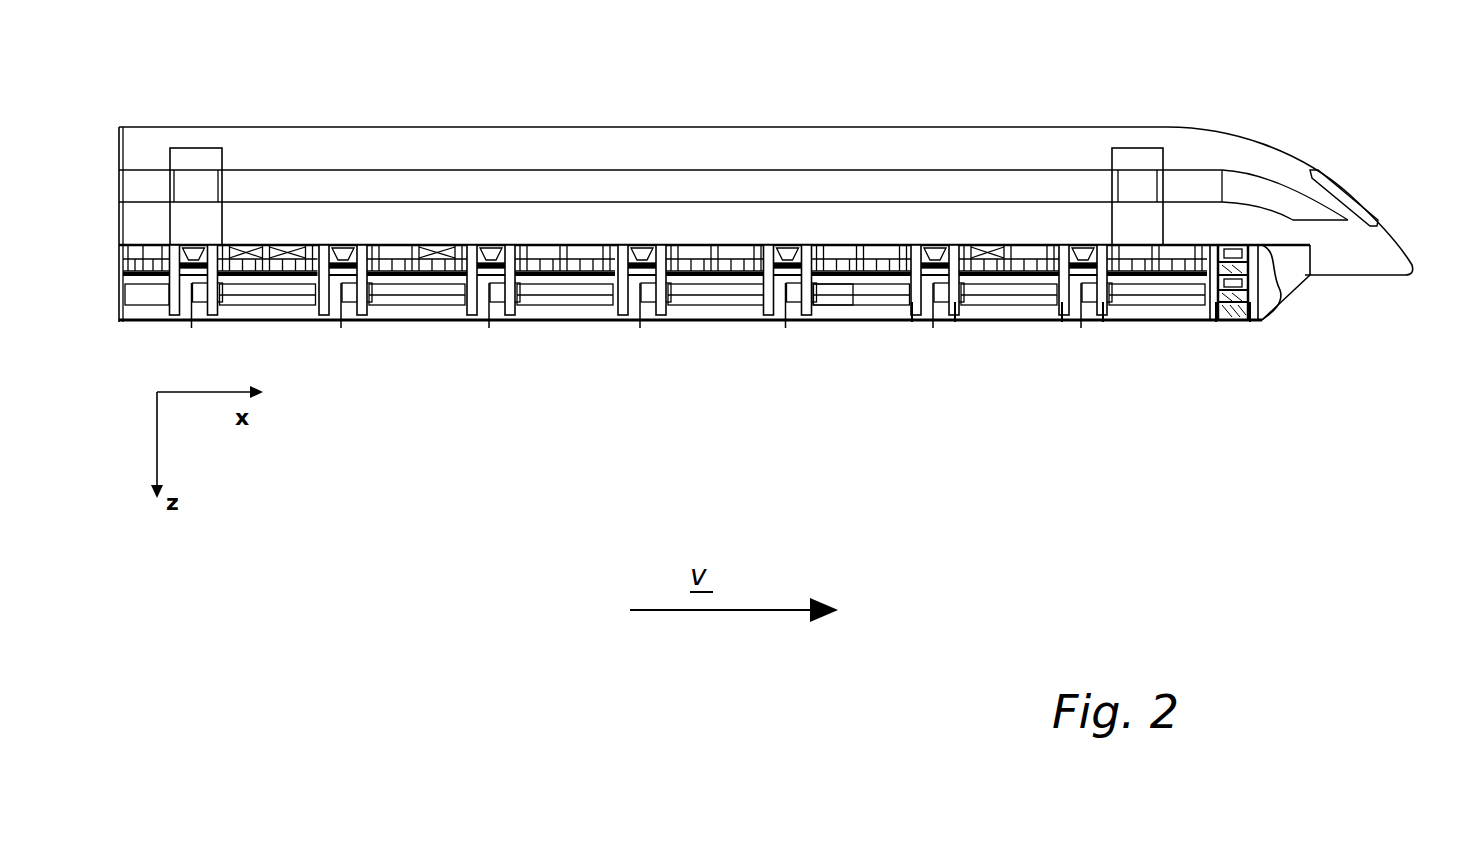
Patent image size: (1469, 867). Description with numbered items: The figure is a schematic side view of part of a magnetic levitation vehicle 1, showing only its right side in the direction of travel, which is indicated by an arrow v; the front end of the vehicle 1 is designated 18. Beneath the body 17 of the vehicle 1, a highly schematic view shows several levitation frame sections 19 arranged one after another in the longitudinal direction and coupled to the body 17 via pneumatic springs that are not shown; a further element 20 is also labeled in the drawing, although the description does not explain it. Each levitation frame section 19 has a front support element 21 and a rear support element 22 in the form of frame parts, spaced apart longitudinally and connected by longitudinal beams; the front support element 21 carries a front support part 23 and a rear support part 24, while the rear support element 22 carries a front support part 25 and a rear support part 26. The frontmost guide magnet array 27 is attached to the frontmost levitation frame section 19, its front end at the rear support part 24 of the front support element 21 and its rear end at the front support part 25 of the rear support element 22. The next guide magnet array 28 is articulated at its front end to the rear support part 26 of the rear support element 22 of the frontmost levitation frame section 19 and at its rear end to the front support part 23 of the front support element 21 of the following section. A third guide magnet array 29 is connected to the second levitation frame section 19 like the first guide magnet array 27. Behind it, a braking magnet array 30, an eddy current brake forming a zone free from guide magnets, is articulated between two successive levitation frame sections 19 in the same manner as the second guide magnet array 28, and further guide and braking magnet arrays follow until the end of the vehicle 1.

The magnetic levitation vehicle 1 is at (686, 112).
The body 17 is at (418, 148).
The front end 18 is at (1413, 250).
The levitation frame sections 19 is at (556, 316).
The underfloor equipment box 20 is at (292, 280).
The front support element 21 is at (938, 248).
The rear support element 22 is at (791, 248).
The front support part 23 is at (955, 315).
The rear support part 24 is at (912, 318).
The front support part 25 is at (1103, 315).
The rear support part 26 is at (1062, 315).
The guide magnet array 27 is at (1178, 290).
The guide magnet array 28 is at (1005, 290).
The guide magnet array 29 is at (843, 290).
The braking magnet array 30 is at (713, 300).